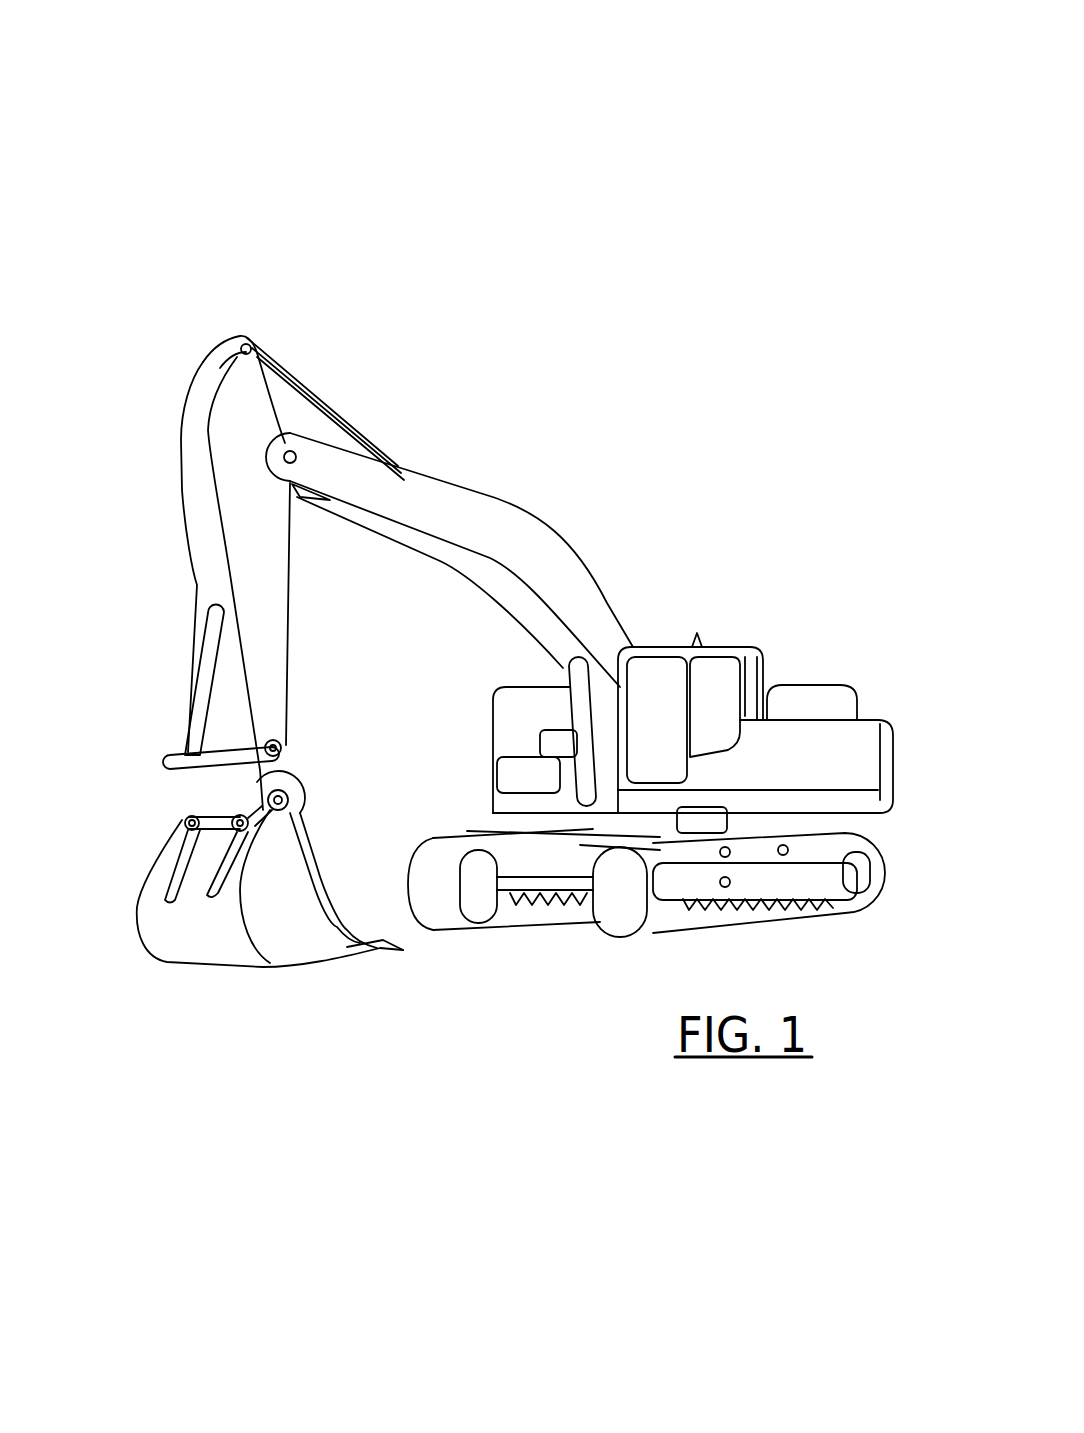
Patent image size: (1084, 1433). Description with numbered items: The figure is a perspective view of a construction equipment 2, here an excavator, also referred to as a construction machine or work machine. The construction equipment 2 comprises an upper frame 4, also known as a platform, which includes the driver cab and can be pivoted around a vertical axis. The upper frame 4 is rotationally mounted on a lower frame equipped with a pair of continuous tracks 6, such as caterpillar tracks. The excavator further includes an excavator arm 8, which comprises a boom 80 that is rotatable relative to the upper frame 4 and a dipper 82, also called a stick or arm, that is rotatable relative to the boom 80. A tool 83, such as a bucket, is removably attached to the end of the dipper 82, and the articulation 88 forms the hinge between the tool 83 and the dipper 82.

The construction equipment 2 is at (447, 1130).
The upper frame 4 is at (697, 637).
The continuous tracks 6 is at (857, 867).
The excavator arm 8 is at (332, 125).
The boom 80 is at (473, 515).
The dipper 82 is at (247, 558).
The tool 83 is at (270, 917).
The articulation 88 is at (270, 793).